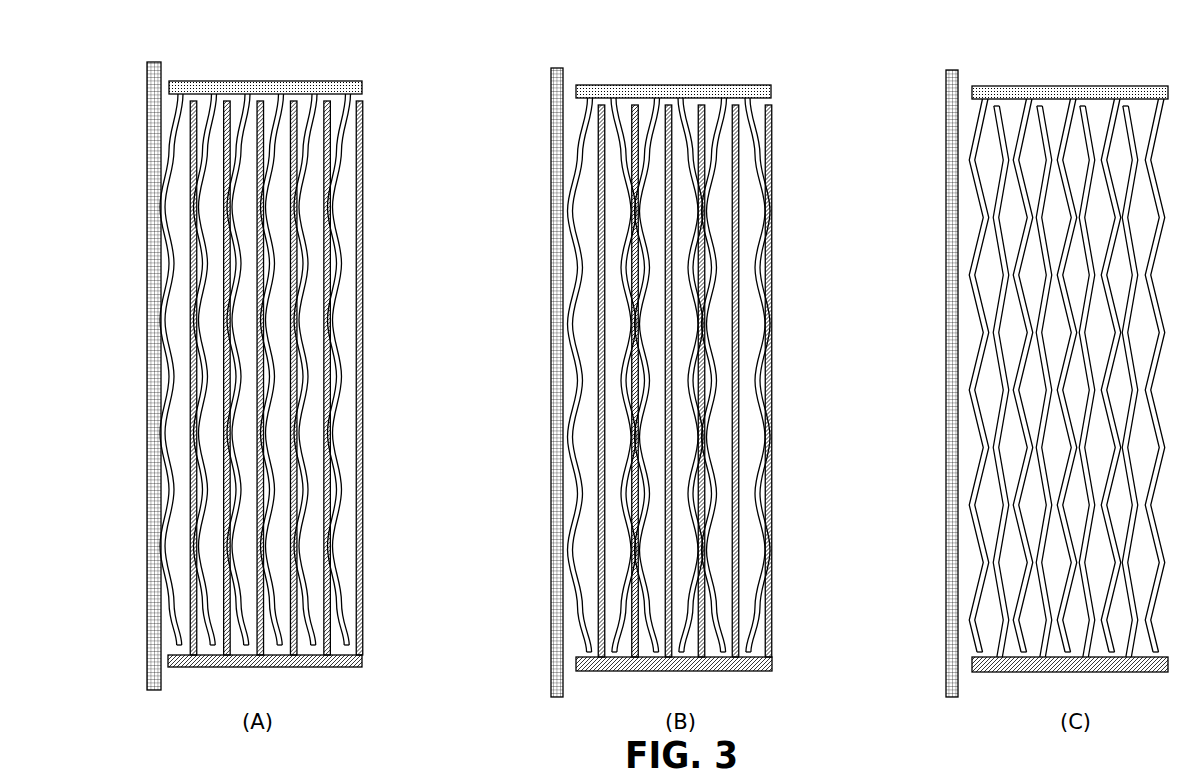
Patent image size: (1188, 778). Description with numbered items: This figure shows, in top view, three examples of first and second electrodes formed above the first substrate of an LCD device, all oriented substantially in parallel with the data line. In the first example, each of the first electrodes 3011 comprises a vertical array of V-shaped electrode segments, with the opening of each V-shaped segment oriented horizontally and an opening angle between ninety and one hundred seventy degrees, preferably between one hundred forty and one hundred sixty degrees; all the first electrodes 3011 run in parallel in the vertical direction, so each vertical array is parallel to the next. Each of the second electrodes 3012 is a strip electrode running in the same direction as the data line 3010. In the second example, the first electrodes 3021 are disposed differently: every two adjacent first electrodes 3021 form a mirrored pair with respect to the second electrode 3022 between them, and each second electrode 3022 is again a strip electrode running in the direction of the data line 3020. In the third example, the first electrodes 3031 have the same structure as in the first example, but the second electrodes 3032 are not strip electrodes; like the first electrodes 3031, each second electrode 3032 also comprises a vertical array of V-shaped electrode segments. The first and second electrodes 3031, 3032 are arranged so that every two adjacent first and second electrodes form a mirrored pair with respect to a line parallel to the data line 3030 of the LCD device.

The data line 3010 is at (147, 381).
The first electrode 3011 is at (180, 110).
The second electrode 3012 is at (230, 110).
The data line 3020 is at (551, 381).
The first electrode 3021 is at (590, 112).
The second electrode 3022 is at (640, 112).
The data line 3030 is at (946, 383).
The first electrode 3031 is at (983, 112).
The second electrode 3032 is at (1045, 112).